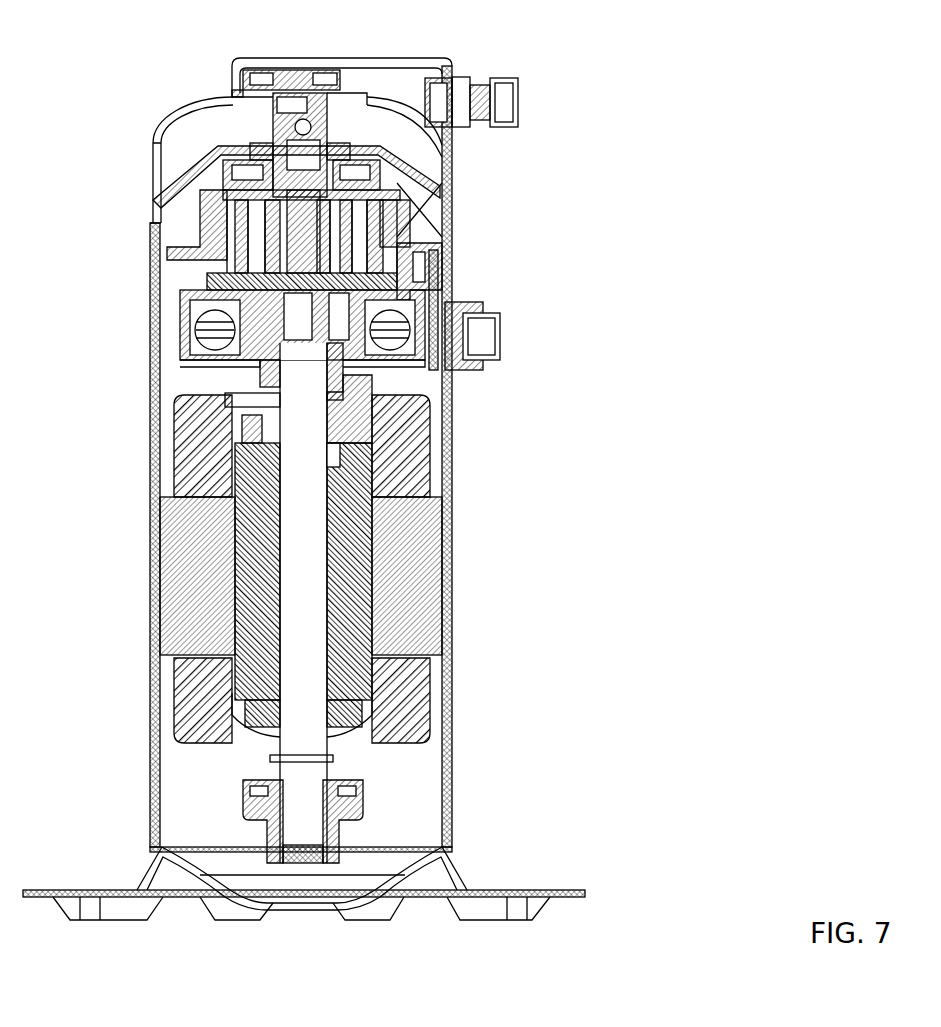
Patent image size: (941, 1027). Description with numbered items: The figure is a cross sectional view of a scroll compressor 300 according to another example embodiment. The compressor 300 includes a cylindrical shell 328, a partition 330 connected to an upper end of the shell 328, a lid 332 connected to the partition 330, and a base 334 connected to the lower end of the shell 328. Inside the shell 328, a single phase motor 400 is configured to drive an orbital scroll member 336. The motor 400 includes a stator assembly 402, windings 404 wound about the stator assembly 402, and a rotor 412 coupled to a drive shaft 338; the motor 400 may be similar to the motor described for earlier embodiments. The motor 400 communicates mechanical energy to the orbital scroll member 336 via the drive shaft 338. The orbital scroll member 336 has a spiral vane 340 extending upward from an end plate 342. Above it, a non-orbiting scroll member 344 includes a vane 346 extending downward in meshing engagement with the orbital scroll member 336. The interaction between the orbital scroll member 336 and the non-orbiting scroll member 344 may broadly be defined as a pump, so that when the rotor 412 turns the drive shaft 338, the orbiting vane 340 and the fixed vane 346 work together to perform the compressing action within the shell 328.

The compressor 300 is at (522, 52).
The cylindrical shell 328 is at (453, 800).
The partition 330 is at (188, 165).
The lid 332 is at (300, 57).
The base 334 is at (585, 893).
The orbital scroll member 336 is at (188, 292).
The drive shaft 338 is at (300, 388).
The spiral vane 340 is at (222, 222).
The end plate 342 is at (450, 247).
The non-orbiting scroll member 344 is at (442, 192).
The vane 346 is at (440, 228).
The single phase motor 400 is at (433, 427).
The stator assembly 402 is at (427, 555).
The windings 404 is at (436, 455).
The rotor 412 is at (245, 632).